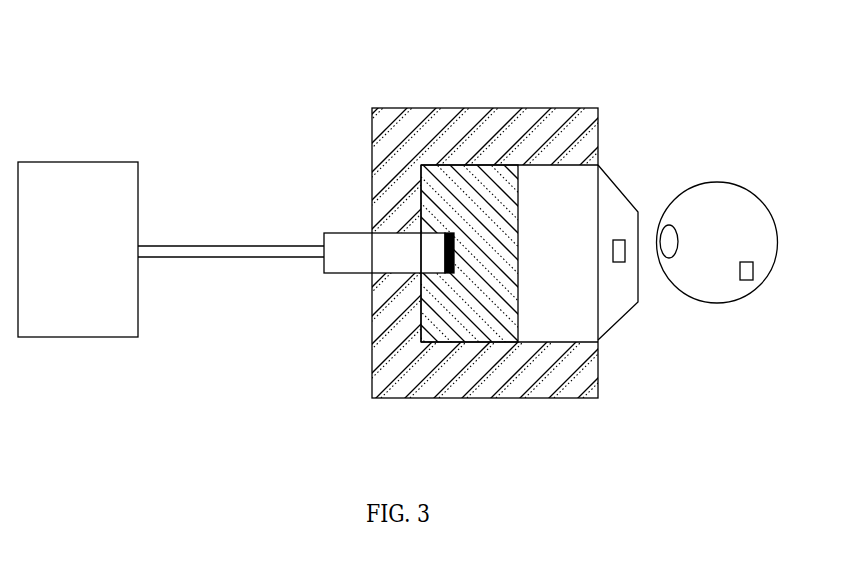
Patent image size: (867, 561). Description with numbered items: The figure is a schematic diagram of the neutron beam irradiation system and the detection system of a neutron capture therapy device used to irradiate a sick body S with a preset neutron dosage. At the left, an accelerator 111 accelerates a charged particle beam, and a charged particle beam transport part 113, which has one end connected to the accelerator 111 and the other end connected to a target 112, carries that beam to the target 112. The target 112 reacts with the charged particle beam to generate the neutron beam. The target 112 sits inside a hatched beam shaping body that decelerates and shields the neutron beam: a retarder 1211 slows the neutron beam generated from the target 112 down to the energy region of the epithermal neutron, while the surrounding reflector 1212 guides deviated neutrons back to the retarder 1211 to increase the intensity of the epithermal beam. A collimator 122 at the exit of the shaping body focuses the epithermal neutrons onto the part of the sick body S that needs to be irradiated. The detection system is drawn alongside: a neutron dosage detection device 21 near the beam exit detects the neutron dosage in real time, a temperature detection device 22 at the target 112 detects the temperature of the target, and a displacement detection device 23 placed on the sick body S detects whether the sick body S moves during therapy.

The accelerator 111 is at (95, 204).
The charged particle beam transport part 113 is at (232, 252).
The reflector 1212 is at (400, 200).
The target 112 is at (449, 232).
The retarder 1211 is at (495, 243).
The temperature detection device 22 is at (457, 260).
The collimator 122 is at (615, 302).
The neutron dosage detection device 21 is at (622, 238).
The displacement detection device 23 is at (748, 262).
The sick body S is at (715, 265).